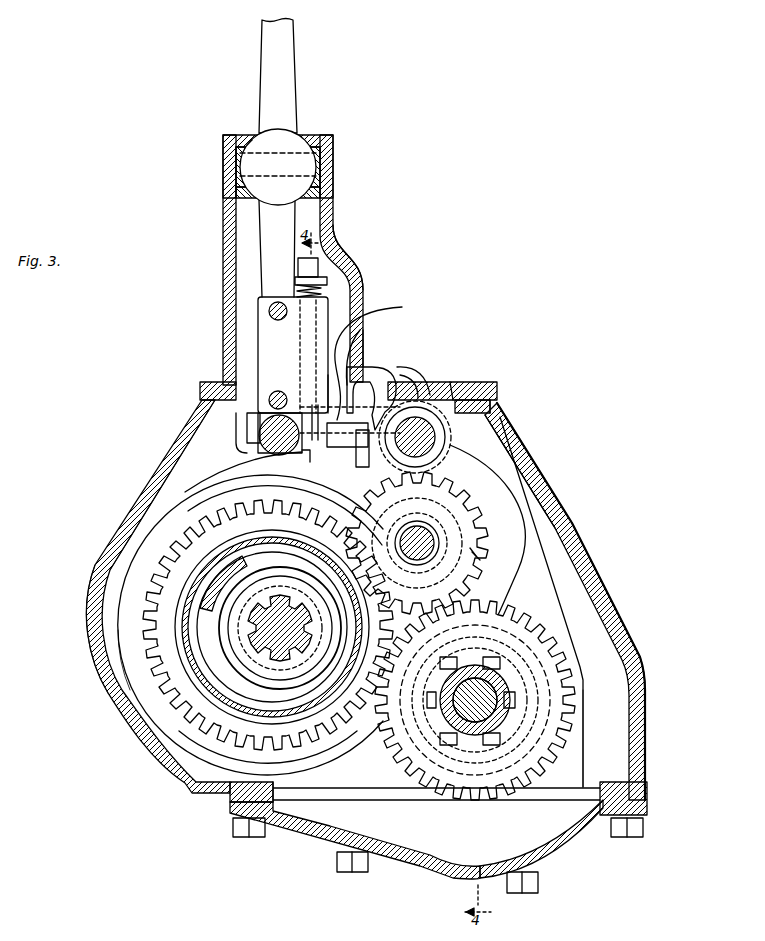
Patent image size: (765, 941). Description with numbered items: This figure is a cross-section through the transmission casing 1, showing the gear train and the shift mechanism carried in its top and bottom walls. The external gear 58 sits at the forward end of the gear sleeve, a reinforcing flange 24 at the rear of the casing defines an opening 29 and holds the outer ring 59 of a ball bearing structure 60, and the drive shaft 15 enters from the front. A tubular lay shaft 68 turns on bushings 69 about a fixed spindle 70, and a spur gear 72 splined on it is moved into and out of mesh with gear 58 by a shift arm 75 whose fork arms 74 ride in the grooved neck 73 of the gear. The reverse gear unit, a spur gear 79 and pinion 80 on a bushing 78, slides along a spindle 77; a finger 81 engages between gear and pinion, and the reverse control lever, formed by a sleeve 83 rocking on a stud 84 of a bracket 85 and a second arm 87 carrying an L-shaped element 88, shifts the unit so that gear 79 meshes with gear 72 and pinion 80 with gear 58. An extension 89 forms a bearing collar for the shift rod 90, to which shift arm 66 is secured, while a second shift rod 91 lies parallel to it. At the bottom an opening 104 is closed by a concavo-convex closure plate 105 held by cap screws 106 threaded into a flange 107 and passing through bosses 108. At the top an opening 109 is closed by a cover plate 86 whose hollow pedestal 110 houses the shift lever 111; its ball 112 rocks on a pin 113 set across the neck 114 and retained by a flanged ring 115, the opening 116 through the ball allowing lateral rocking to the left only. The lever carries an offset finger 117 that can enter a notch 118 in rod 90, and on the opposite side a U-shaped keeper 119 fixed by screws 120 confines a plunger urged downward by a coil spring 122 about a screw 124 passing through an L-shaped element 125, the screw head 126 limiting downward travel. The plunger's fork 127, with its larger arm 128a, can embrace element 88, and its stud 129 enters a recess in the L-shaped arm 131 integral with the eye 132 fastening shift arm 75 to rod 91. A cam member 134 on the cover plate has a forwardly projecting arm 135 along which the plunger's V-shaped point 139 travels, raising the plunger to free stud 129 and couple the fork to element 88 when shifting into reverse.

The casing 1 is at (498, 426).
The drive shaft 15 is at (283, 645).
The second reinforcing flange 24 is at (133, 530).
The opening of the casing 29 is at (167, 513).
The external gear 58 is at (187, 717).
The outer ring 59 is at (138, 565).
The ball bearing structure 60 is at (130, 649).
The shift arm 66 is at (236, 566).
The sleeve or tubular lay shaft 68 is at (470, 740).
The bushings 69 is at (450, 720).
The spindle 70 is at (472, 665).
The spur gear 72 is at (546, 757).
The grooved neck 73 is at (495, 738).
The arms of the fork 74 is at (583, 675).
The shift arm 75 is at (495, 485).
The spindle 77 is at (423, 523).
The bushing 78 is at (418, 562).
The spur gear 79 is at (478, 558).
The pinion 80 is at (458, 543).
The finger 81 is at (417, 543).
The short sleeve 83 is at (285, 512).
The stud 84 is at (335, 505).
The supporting bracket 85 is at (446, 397).
The cover plate 86 is at (488, 383).
The second arm 87 is at (412, 388).
The element 88 is at (364, 364).
The extension 89 is at (227, 433).
The shift rod 90 is at (250, 462).
The second shift rod 91 is at (445, 437).
The opening 104 is at (300, 822).
The closure plate 105 is at (420, 864).
The cap screws 106 is at (248, 837).
The flange 107 is at (612, 792).
The bosses 108 is at (340, 850).
The opening 109 is at (454, 383).
The hollow pedestal or housing 110 is at (343, 252).
The shift lever 111 is at (291, 84).
The ball 112 is at (292, 146).
The pin 113 is at (320, 163).
The neck 114 is at (320, 189).
The flanged retaining ring 115 is at (333, 146).
The opening 116 is at (252, 143).
The offset finger 117 is at (250, 426).
The slot or notch 118 is at (262, 447).
The keeper 119 is at (268, 355).
The screws 120 is at (280, 391).
The expansion coil spring 122 is at (294, 312).
The screw 124 is at (327, 280).
The L-shaped element 125 is at (322, 291).
The head 126 is at (318, 268).
The fork 127 is at (326, 380).
The fork arm 128a is at (386, 357).
The stud 129 is at (350, 427).
The L-shaped arm 131 is at (356, 448).
The eye 132 is at (442, 446).
The cam member 134 is at (380, 370).
The arm 135 is at (300, 458).
The V-shaped element or extension 139 is at (316, 412).